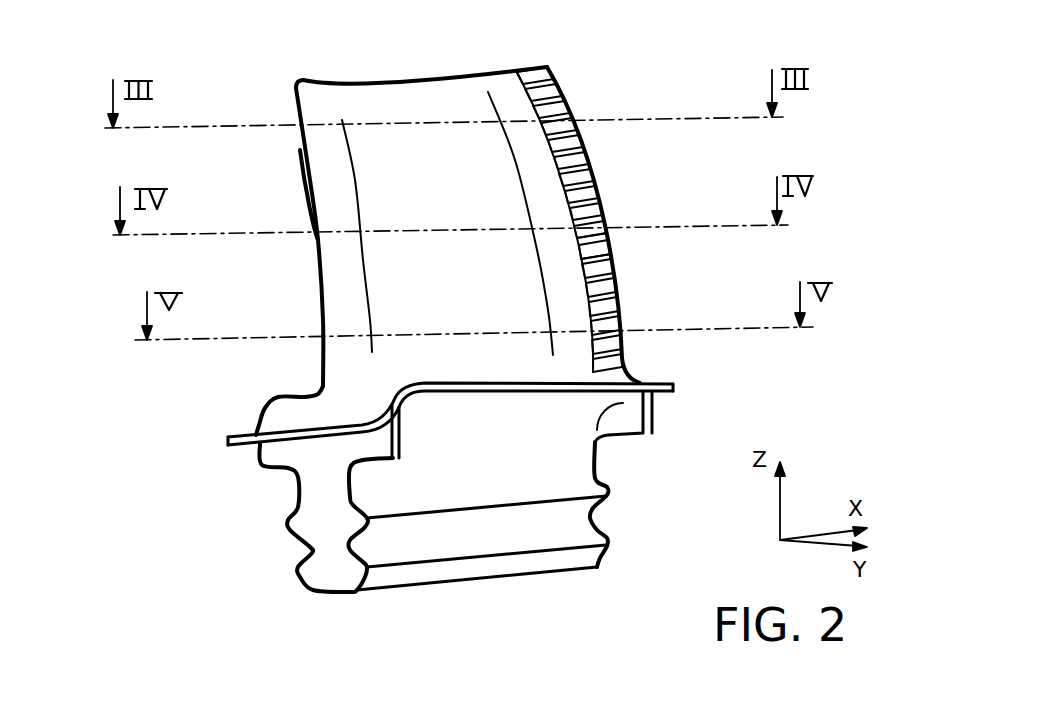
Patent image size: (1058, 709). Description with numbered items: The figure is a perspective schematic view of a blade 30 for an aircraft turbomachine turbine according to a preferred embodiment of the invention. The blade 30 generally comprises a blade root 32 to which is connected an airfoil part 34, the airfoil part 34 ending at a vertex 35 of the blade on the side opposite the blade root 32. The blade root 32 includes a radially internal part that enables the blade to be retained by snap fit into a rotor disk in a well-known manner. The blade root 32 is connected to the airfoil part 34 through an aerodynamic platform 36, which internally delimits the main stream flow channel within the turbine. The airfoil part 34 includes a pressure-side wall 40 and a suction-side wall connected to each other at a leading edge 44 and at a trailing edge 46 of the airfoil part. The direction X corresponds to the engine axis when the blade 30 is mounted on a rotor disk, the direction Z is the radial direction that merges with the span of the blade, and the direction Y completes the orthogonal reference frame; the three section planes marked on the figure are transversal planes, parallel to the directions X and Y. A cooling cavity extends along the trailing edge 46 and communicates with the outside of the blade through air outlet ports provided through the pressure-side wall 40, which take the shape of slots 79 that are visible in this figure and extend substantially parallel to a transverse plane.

The blade 30 is at (390, 335).
The blade root 32 is at (285, 529).
The airfoil part 34 is at (603, 192).
The vertex 35 is at (412, 78).
The aerodynamic platform 36 is at (673, 394).
The pressure-side wall 40 is at (464, 222).
The leading edge 44 is at (315, 214).
The trailing edge 46 is at (613, 245).
The slots 79 is at (615, 295).